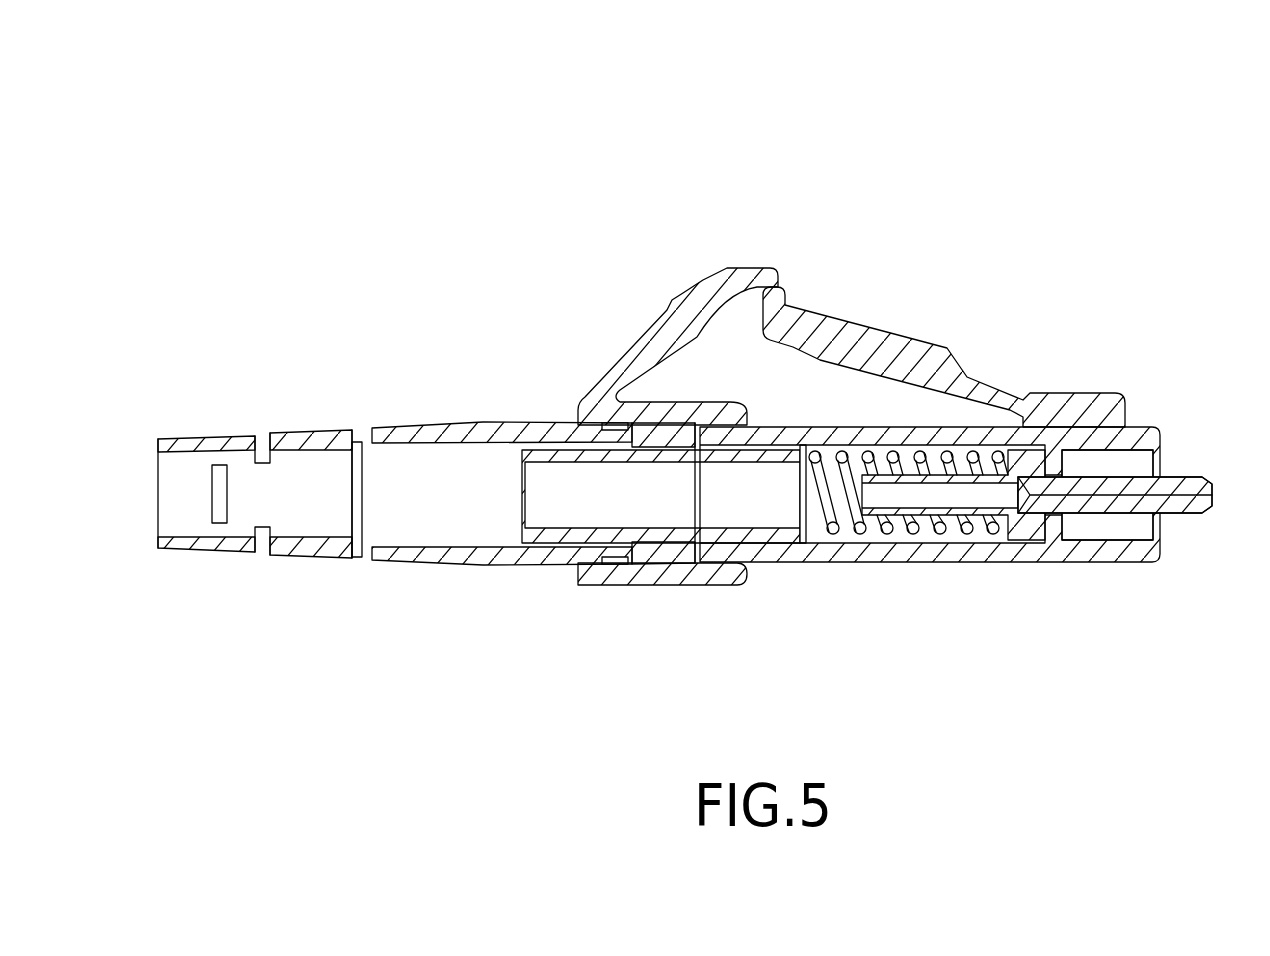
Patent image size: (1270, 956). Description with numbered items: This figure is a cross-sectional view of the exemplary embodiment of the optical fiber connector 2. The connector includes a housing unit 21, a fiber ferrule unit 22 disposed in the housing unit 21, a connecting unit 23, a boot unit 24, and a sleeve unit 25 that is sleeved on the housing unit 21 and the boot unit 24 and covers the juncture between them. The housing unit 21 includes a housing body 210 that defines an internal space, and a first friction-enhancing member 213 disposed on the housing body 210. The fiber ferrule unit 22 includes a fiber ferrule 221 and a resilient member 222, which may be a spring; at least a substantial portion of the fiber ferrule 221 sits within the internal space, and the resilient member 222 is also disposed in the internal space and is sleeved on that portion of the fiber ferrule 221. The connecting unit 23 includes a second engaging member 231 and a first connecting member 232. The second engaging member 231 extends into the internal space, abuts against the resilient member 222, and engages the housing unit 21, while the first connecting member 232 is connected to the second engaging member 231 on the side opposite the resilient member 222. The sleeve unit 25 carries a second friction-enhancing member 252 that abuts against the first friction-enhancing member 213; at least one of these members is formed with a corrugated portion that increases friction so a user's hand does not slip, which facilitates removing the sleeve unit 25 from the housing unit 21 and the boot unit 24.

The optical fiber connector 2 is at (742, 172).
The housing unit 21 is at (1000, 324).
The housing body 210 is at (1135, 556).
The first friction-enhancing member 213 is at (882, 325).
The fiber ferrule unit 22 is at (1217, 447).
The fiber ferrule 221 is at (1027, 525).
The resilient member 222 is at (920, 527).
The connecting unit 23 is at (498, 535).
The second engaging member 231 is at (783, 584).
The first connecting member 232 is at (562, 572).
The boot unit 24 is at (395, 389).
The sleeve unit 25 is at (633, 270).
The second friction-enhancing member 252 is at (623, 348).